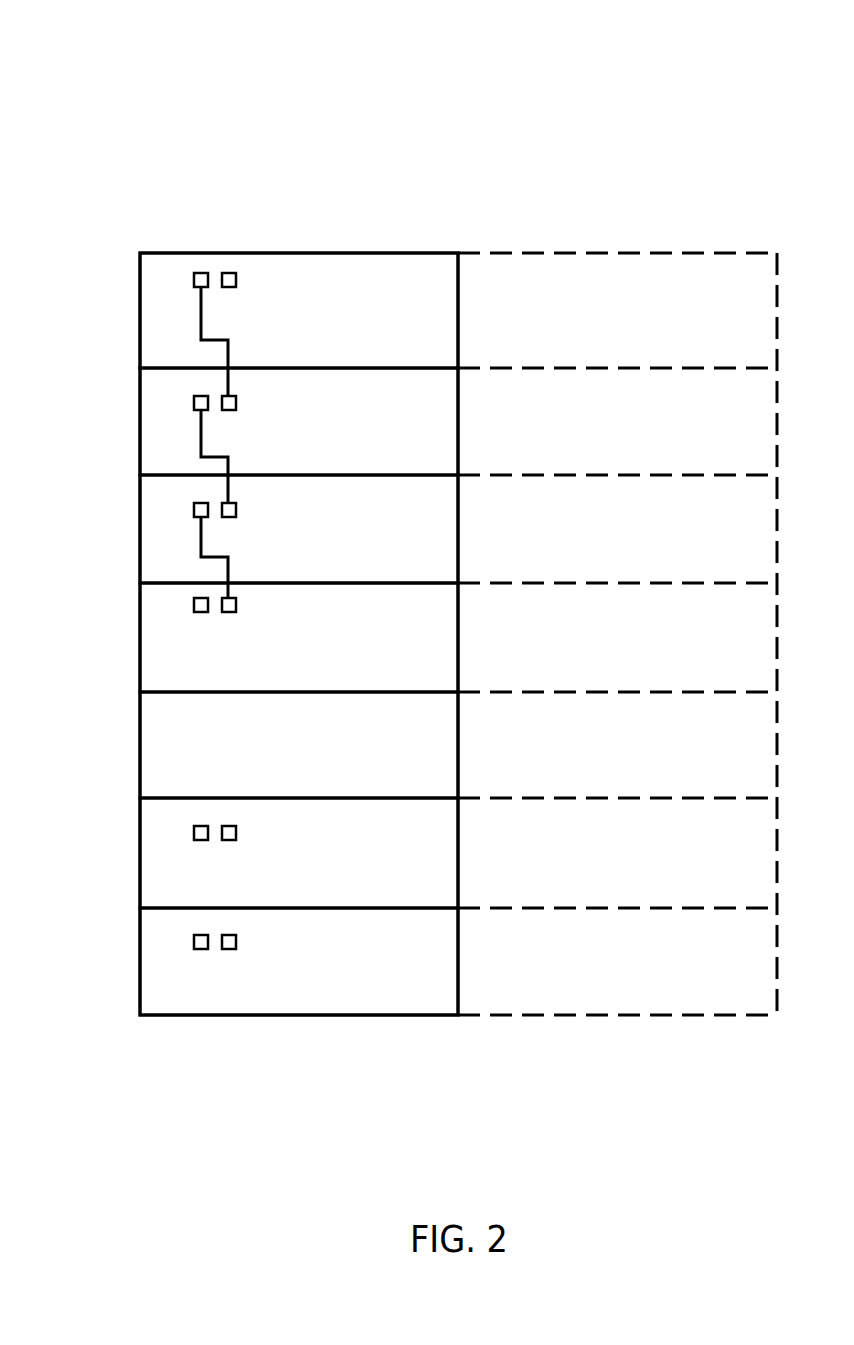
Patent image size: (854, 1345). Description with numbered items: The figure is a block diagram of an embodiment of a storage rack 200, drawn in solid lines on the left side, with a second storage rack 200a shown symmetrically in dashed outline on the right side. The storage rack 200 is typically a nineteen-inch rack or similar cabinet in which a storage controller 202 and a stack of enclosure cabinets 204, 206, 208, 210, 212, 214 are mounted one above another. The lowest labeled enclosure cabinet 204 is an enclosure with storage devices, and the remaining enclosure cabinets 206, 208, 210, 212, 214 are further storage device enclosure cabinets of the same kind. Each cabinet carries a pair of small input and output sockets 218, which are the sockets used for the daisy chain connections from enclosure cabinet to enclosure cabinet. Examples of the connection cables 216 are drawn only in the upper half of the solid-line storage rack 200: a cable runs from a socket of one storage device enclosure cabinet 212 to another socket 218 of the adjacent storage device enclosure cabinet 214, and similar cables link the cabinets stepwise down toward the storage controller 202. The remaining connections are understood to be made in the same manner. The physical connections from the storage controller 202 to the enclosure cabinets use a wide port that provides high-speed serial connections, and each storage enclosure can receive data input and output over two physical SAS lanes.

The storage rack 200 is at (113, 66).
The second storage rack 200a is at (583, 172).
The storage controller 202 is at (220, 653).
The enclosure cabinet 204 is at (220, 742).
The enclosure cabinet 206 is at (363, 845).
The enclosure cabinet 208 is at (363, 957).
The enclosure cabinet 210 is at (368, 522).
The storage device enclosure cabinet 212 is at (368, 415).
The storage device enclosure cabinet 214 is at (368, 297).
The connection cables 216 is at (230, 330).
The input and output sockets 218 is at (230, 266).